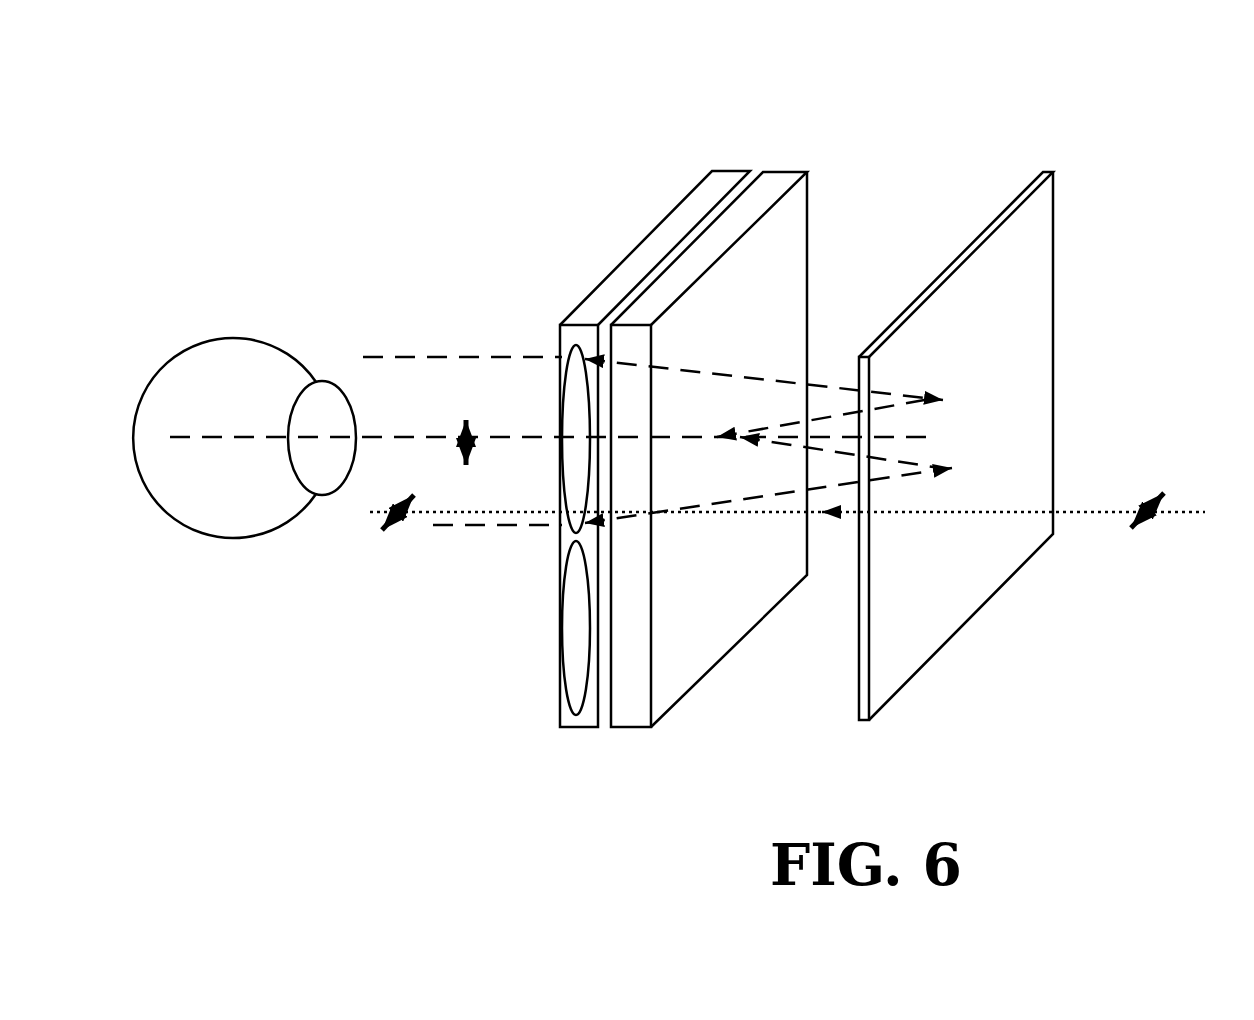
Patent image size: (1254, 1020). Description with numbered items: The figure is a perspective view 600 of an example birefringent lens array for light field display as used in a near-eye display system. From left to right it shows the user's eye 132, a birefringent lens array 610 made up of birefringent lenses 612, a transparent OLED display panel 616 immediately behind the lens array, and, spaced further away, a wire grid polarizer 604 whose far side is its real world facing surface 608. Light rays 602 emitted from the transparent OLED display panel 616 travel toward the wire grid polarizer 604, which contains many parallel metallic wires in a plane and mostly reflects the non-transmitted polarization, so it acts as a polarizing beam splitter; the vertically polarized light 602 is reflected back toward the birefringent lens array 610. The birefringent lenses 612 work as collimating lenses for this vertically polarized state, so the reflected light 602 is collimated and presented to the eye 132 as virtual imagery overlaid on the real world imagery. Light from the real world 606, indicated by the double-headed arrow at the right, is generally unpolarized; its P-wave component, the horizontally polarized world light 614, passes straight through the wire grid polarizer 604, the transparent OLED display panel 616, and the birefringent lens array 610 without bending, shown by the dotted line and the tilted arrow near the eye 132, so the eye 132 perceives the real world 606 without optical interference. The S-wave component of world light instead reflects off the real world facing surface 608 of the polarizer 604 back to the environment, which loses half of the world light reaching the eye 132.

The perspective view 600 is at (752, 64).
The eye 132 is at (237, 540).
The light rays 602 is at (472, 527).
The wire grid polarizer 604 is at (876, 697).
The real world 606 is at (1203, 565).
The real world facing surface 608 is at (968, 594).
The birefringent lens array 610 is at (575, 728).
The birefringent lenses 612 is at (572, 532).
The horizontally polarized world light 614 is at (376, 513).
The transparent OLED display panel 616 is at (630, 728).